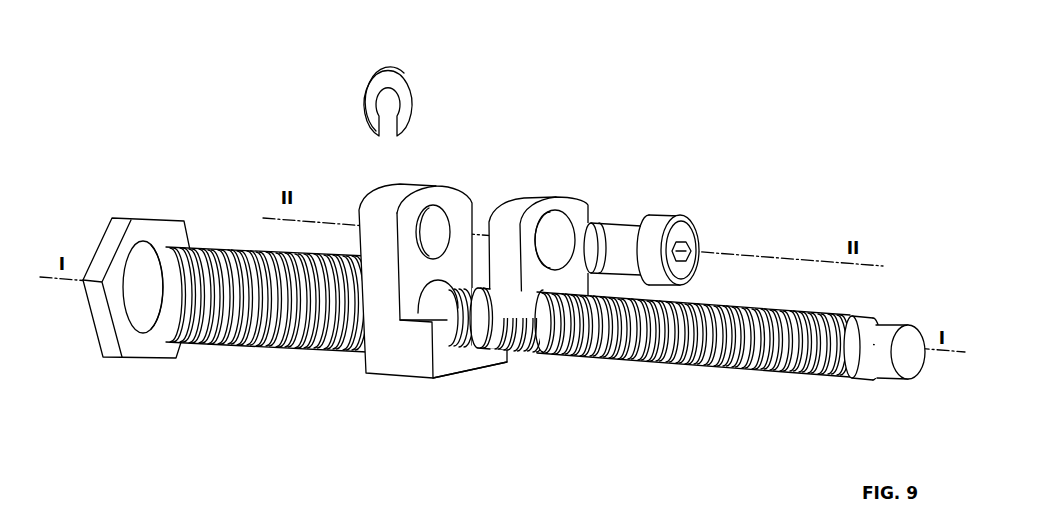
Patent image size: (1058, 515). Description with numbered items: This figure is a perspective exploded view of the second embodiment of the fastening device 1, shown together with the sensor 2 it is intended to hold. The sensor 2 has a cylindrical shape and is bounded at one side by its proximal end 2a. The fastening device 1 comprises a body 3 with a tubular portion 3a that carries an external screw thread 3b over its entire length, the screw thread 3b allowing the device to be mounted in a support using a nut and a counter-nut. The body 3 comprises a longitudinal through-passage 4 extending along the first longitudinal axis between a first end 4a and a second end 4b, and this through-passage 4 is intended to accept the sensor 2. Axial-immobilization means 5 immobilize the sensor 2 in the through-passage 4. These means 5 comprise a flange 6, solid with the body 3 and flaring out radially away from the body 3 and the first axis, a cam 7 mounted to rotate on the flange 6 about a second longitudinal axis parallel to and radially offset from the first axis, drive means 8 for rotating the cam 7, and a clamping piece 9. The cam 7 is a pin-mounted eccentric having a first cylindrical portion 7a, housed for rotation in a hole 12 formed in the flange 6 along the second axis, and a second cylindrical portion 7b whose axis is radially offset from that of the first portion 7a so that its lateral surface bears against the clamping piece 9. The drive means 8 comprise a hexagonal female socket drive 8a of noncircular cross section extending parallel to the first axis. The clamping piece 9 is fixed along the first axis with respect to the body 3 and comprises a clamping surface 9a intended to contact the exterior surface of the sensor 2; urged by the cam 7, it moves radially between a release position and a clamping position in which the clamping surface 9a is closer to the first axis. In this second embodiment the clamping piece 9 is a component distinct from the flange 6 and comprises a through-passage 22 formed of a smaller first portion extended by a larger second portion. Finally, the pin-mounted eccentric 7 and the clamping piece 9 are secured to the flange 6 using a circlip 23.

The fastening device 1 is at (504, 248).
The sensor 2 is at (697, 363).
The proximal end 2a is at (867, 373).
The body 3 is at (266, 367).
The tubular portion 3a is at (263, 346).
The external screw thread 3b is at (150, 293).
The longitudinal through-passage 4 is at (425, 305).
The first end 4a is at (441, 298).
The second end 4b is at (150, 285).
The axial-immobilization means 5 is at (576, 266).
The flange 6 is at (433, 291).
The cam 7 is at (687, 211).
The first cylindrical portion 7a is at (617, 236).
The second cylindrical portion 7b is at (714, 211).
The drive means 8 is at (726, 235).
The female socket drive 8a is at (692, 246).
The clamping piece 9 is at (550, 254).
The clamping surface 9a is at (538, 352).
The hole 12 is at (437, 226).
The through-passage 22 is at (563, 238).
The circlip 23 is at (366, 100).